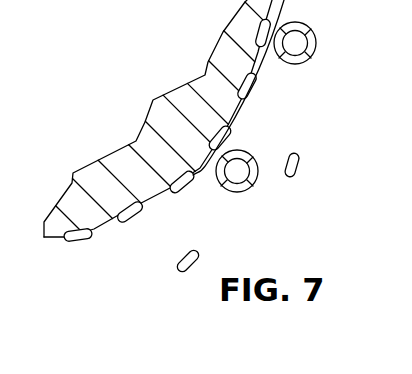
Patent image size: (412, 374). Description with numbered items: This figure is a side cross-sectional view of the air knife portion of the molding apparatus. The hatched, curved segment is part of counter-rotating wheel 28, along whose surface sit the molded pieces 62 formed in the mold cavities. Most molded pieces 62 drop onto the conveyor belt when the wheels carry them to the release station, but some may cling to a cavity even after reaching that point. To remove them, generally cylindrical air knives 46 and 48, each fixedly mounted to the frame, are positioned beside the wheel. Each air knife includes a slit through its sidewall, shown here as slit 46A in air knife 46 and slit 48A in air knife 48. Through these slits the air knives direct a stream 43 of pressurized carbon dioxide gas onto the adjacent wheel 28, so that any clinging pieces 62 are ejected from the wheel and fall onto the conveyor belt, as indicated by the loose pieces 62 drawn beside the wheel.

The counter-rotating wheel 28 is at (206, 72).
The molded pieces 62 is at (128, 201).
The air knife 46 is at (316, 34).
The slit 46A is at (274, 45).
The air knife 48 is at (248, 151).
The slit 48A is at (219, 176).
The high pressure gas stream 43 is at (218, 173).